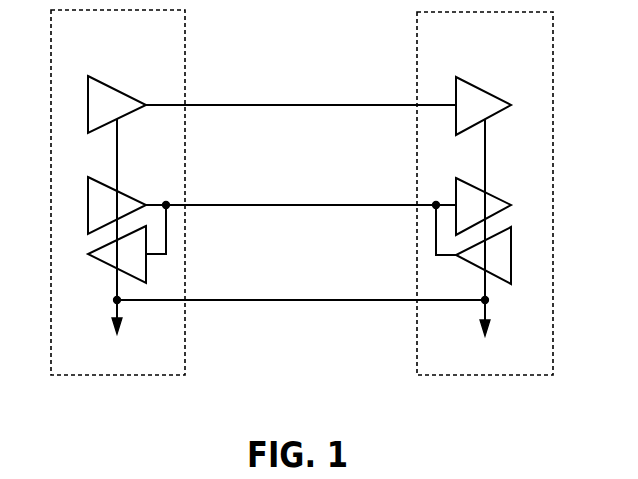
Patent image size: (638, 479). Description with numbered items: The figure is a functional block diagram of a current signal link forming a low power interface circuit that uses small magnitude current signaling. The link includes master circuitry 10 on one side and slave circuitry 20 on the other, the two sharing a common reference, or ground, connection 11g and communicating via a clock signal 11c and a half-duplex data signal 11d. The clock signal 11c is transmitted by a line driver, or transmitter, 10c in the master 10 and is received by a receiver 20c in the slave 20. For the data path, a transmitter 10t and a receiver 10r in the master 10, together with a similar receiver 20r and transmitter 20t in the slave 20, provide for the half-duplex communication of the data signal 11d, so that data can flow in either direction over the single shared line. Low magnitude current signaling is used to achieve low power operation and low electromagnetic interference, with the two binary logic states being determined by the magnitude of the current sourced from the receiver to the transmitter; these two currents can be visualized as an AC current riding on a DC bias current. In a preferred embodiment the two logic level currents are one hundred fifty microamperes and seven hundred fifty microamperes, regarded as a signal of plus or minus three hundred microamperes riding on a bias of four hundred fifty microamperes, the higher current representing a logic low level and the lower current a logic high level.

The master circuitry 10 is at (125, 376).
The slave circuitry 20 is at (498, 376).
The line driver 10c is at (126, 94).
The transmitter 10t is at (123, 193).
The receiver 10r is at (108, 266).
The receiver 20c is at (496, 97).
The receiver 20r is at (496, 196).
The transmitter 20t is at (506, 282).
The clock signal 11c is at (243, 103).
The half-duplex data signal 11d is at (243, 203).
The ground connection 11g is at (243, 298).